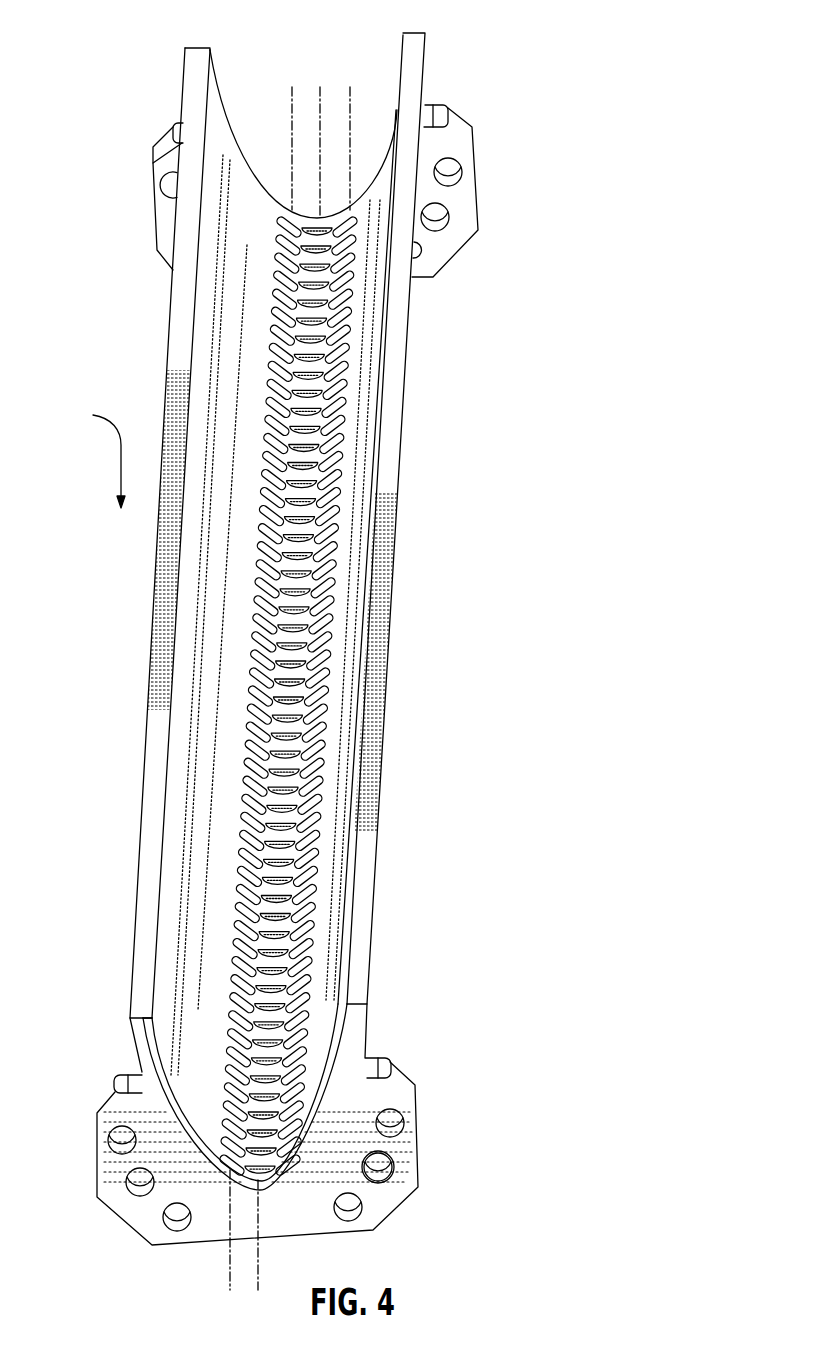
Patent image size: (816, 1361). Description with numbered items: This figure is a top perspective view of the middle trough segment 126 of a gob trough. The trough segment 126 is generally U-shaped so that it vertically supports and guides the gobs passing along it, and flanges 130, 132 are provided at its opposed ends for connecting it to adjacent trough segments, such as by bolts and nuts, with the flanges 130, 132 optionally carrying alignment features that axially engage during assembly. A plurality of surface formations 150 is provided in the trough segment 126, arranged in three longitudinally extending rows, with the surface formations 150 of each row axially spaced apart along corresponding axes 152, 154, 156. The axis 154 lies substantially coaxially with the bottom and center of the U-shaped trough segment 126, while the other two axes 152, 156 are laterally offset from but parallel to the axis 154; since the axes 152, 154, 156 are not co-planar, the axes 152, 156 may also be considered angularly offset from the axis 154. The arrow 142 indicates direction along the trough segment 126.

The trough segment 126 is at (393, 448).
The flange 130 is at (462, 213).
The flange 132 is at (407, 1158).
The flow direction 142 is at (96, 446).
The surface formations 150 is at (328, 631).
The axis 152 is at (254, 112).
The axis 154 is at (318, 118).
The axis 156 is at (358, 110).